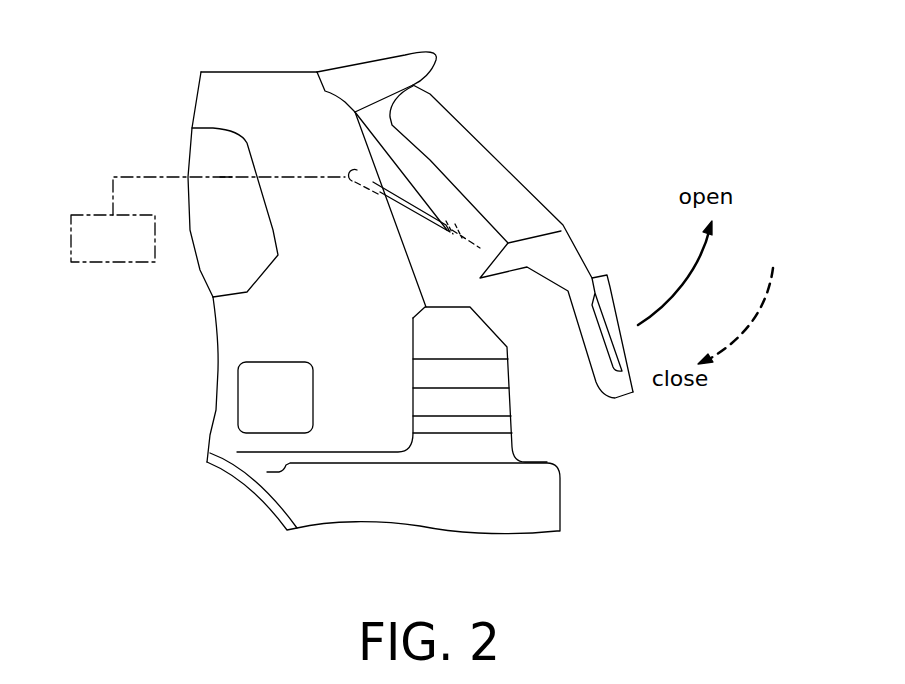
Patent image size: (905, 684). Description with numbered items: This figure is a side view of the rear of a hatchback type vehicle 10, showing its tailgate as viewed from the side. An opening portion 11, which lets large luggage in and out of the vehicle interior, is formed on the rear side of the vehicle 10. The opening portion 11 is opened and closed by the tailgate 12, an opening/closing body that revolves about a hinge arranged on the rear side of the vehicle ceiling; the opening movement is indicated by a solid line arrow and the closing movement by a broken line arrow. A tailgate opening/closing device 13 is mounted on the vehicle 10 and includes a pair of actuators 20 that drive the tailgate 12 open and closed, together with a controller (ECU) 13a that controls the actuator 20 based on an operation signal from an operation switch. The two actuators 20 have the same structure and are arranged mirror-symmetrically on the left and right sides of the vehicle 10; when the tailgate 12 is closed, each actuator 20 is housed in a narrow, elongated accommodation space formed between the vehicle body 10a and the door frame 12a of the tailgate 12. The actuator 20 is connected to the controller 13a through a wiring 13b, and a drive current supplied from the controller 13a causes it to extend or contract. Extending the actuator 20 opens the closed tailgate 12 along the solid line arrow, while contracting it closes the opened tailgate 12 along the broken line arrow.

The vehicle 10 is at (482, 76).
The vehicle body 10a is at (262, 103).
The opening portion 11 is at (571, 418).
The tailgate 12 is at (560, 260).
The door frame 12a is at (450, 210).
The tailgate opening/closing device 13 is at (146, 176).
The controller (ECU) 13a is at (112, 265).
The wiring 13b is at (228, 177).
The actuator 20 is at (403, 200).